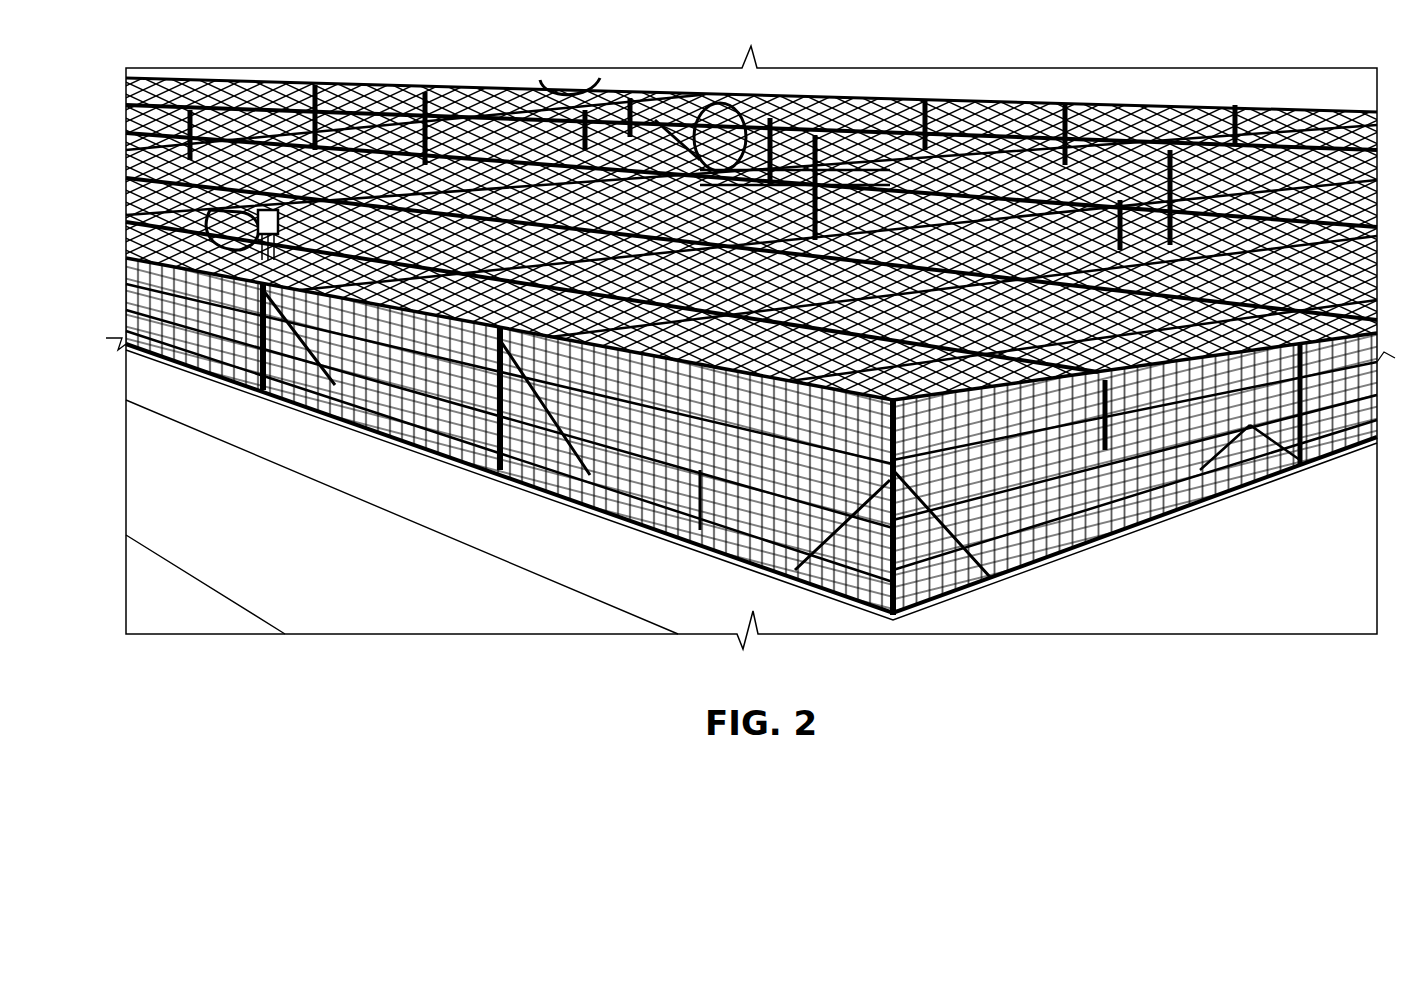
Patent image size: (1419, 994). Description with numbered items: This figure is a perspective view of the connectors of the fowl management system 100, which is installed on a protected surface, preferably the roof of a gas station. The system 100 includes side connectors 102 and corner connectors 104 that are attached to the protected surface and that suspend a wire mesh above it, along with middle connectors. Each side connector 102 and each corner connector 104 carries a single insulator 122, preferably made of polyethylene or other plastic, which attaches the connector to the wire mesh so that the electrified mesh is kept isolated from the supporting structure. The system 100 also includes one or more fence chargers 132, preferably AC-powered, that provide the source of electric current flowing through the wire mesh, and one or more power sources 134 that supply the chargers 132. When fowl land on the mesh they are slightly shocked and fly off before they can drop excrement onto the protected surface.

The fowl management system 100 is at (992, 90).
The side connectors 102 is at (228, 380).
The corner connectors 104 is at (425, 88).
The insulators 122 is at (292, 222).
The fence chargers 132 is at (267, 210).
The power sources 134 is at (257, 377).